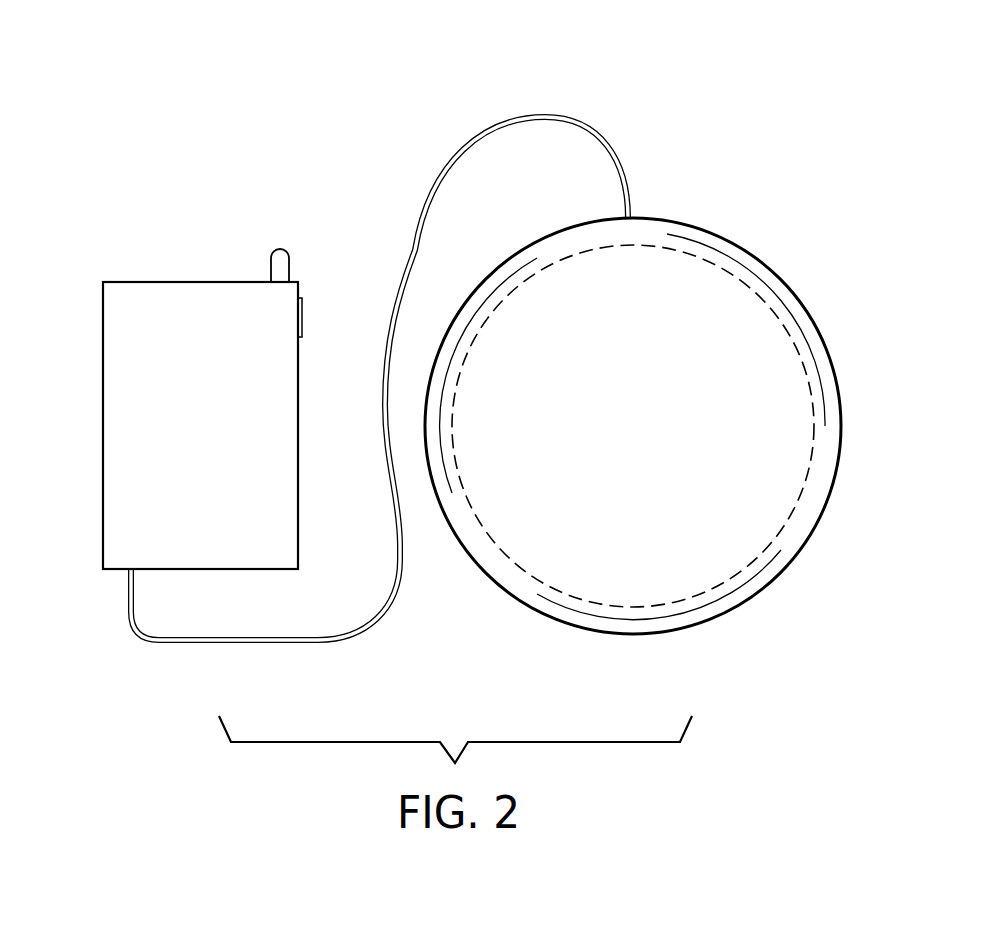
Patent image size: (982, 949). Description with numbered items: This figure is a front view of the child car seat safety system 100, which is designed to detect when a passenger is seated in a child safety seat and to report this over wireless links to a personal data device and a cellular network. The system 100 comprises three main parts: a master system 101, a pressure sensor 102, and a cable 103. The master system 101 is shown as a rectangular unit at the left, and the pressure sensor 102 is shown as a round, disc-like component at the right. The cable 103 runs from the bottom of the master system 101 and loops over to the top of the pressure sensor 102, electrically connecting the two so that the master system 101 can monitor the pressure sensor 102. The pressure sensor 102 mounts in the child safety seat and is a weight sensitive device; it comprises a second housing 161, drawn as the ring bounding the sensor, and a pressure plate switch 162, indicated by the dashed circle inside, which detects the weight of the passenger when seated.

The child car seat safety system 100 is at (140, 103).
The master system 101 is at (103, 343).
The pressure sensor 102 is at (747, 255).
The cable 103 is at (548, 117).
The second housing 161 is at (800, 320).
The pressure plate switch 162 is at (815, 425).